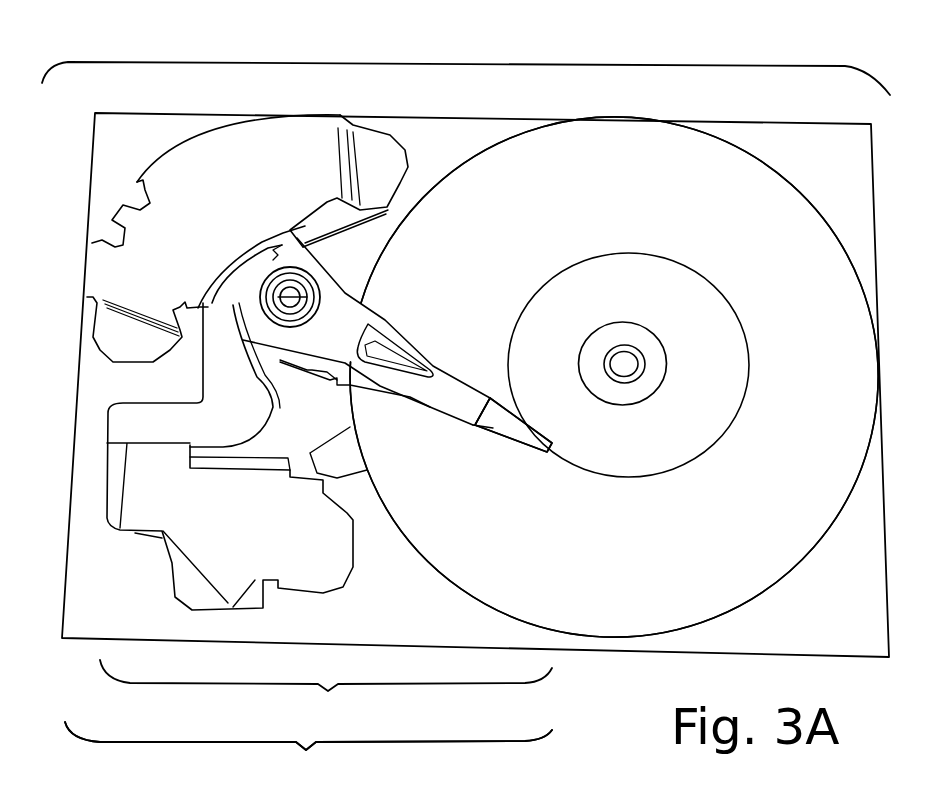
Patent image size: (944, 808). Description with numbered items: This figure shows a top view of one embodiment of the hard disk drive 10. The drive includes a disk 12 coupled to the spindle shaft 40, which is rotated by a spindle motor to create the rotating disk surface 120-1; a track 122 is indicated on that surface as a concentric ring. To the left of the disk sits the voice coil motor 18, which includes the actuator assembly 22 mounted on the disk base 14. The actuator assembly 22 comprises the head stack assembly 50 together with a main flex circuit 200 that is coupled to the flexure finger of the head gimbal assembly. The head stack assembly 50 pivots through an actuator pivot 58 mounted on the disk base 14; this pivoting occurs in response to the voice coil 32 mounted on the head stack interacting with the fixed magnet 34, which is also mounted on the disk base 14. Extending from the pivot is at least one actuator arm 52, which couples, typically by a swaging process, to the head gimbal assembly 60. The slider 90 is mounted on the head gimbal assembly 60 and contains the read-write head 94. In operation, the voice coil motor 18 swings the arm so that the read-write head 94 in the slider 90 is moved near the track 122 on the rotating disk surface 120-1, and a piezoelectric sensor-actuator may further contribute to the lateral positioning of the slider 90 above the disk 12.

The hard disk drive 10 is at (466, 54).
The disk base 14 is at (90, 182).
The fixed magnet 34 is at (247, 362).
The voice coil 32 is at (290, 238).
The actuator pivot 58 is at (307, 297).
The actuator arm 52 is at (366, 331).
The main flex circuit 200 is at (313, 372).
The head gimbal assembly 60 is at (493, 428).
The slider 90 is at (547, 453).
The read-write head 94 is at (513, 455).
The disk 12 is at (621, 191).
The rotating disk surface 120-1 is at (706, 191).
The track 122 is at (749, 352).
The spindle shaft 40 is at (620, 364).
The head stack assembly 50 is at (326, 696).
The voice coil motor 18 is at (308, 760).
The actuator assembly 22 is at (308, 760).